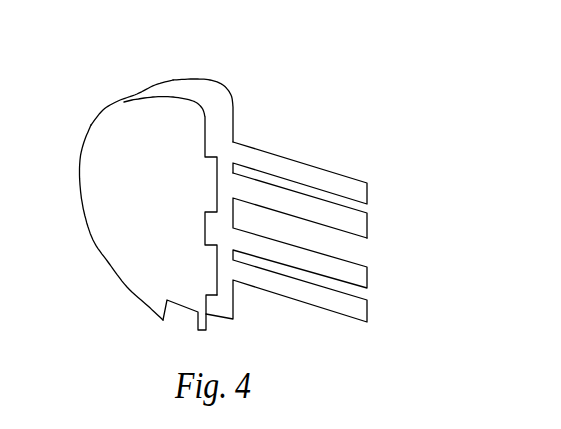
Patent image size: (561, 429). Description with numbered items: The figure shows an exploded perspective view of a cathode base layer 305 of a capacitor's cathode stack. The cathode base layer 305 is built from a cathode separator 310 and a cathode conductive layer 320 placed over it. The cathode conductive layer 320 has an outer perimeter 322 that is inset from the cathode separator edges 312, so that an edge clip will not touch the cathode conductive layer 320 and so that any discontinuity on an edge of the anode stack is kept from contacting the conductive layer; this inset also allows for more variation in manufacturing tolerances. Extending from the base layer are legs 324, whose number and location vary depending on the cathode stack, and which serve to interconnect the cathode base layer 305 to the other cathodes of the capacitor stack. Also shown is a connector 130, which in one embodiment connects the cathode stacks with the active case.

The cathode base layer 305 is at (240, 180).
The cathode separator 310 is at (119, 200).
The cathode separator edges 312 is at (86, 146).
The cathode conductive layer 320 is at (175, 81).
The outer perimeter 322 is at (190, 87).
The legs 324 is at (368, 191).
The connector 130 is at (372, 215).